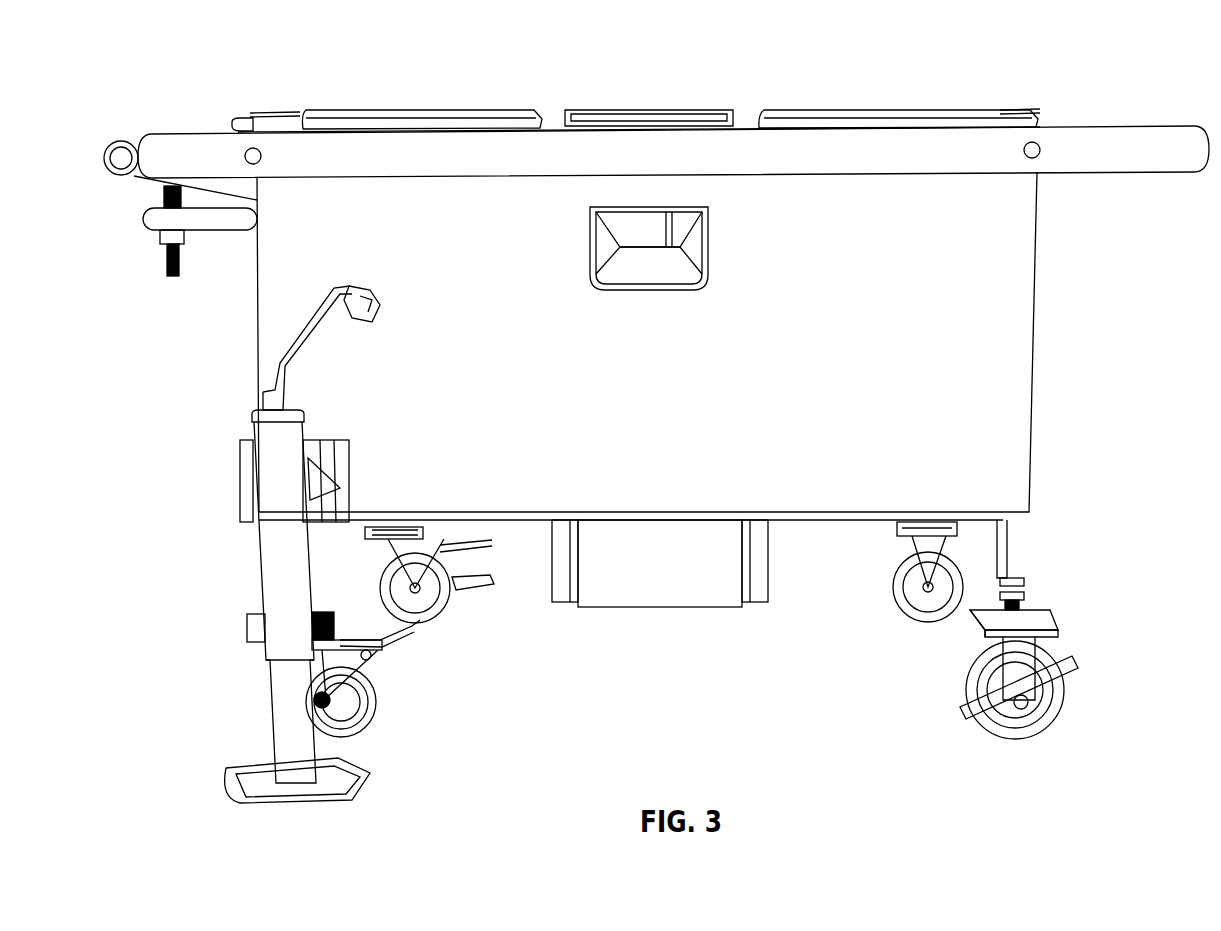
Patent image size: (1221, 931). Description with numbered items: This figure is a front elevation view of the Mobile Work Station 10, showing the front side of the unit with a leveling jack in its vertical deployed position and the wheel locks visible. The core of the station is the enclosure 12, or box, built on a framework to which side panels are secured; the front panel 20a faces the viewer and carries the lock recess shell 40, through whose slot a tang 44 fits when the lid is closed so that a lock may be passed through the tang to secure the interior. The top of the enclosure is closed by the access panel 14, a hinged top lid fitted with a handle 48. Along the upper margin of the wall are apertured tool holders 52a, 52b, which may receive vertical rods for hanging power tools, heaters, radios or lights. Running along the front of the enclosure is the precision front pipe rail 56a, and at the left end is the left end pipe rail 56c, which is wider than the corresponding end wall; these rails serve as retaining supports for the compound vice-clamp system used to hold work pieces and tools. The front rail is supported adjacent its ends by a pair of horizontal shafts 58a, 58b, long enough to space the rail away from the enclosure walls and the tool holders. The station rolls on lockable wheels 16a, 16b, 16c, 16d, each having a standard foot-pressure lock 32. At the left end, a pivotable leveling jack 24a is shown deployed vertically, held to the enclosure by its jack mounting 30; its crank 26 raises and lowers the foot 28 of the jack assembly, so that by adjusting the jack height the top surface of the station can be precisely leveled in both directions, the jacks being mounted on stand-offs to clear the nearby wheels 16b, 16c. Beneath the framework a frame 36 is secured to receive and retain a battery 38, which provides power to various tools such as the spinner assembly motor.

The Mobile Work Station 10 is at (388, 72).
The enclosure 12 is at (1025, 332).
The access panel 14 is at (755, 106).
The lockable wheel 16a is at (1052, 606).
The lockable wheel 16b is at (378, 650).
The lockable wheel 16c is at (372, 552).
The lockable wheel 16d is at (878, 528).
The front panel 20a is at (650, 470).
The leveling jack 24a is at (285, 430).
The crank 26 is at (332, 292).
The foot 28 is at (262, 768).
The jack bracket 30 is at (340, 470).
The foot-pressure lock 32 is at (470, 548).
The frame 36 is at (760, 596).
The battery 38 is at (655, 598).
The lock recess shell 40 is at (622, 262).
The tang 44 is at (672, 232).
The handle 48 is at (632, 118).
The apertured tool holder 52a is at (428, 110).
The apertured tool holder 52b is at (920, 110).
The front pipe rail 56a is at (548, 165).
The left end pipe rail 56c is at (195, 185).
The horizontal shaft 58a is at (247, 152).
The horizontal shaft 58b is at (1040, 152).